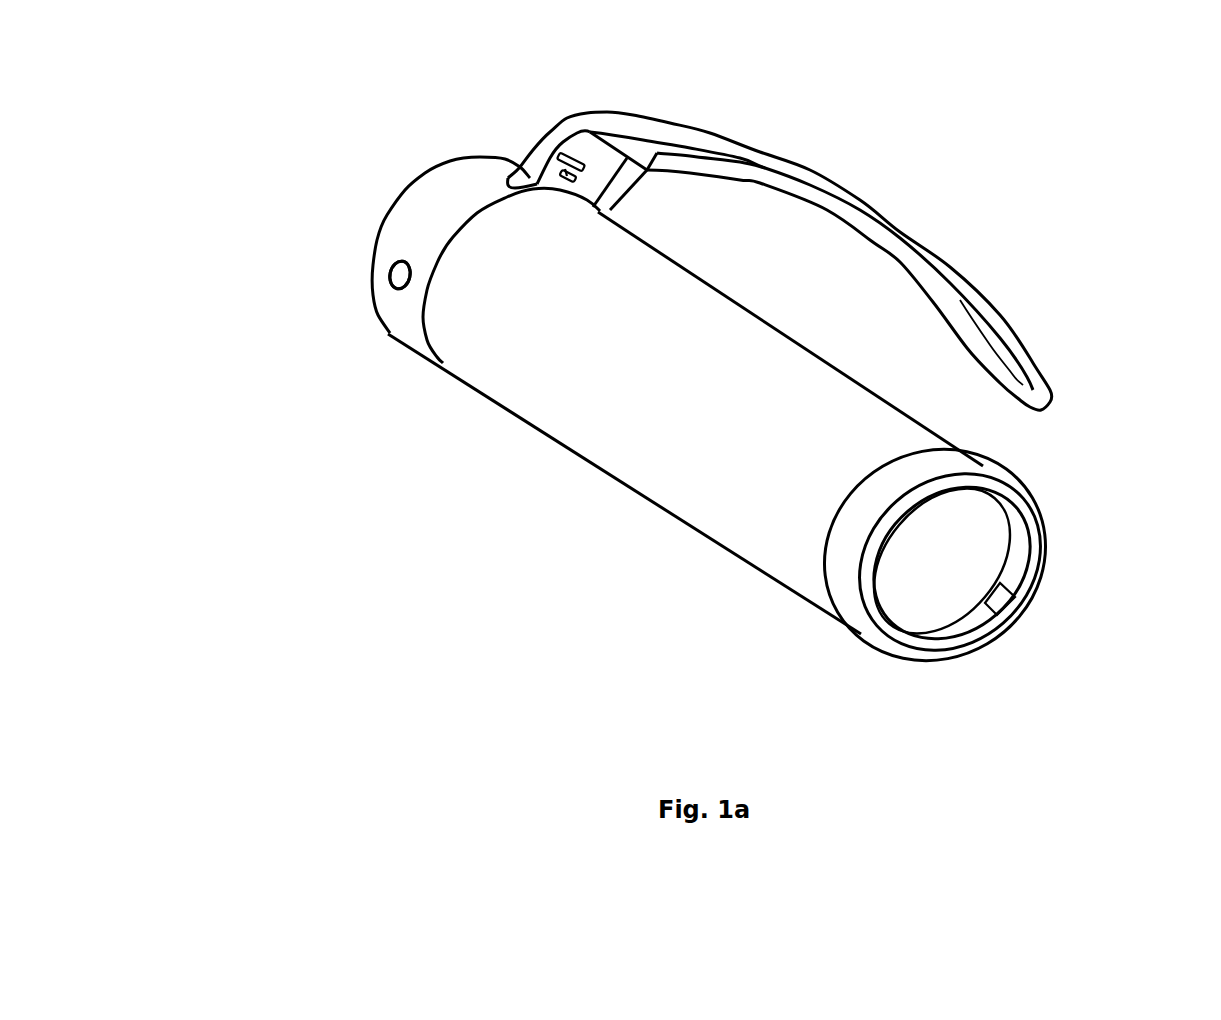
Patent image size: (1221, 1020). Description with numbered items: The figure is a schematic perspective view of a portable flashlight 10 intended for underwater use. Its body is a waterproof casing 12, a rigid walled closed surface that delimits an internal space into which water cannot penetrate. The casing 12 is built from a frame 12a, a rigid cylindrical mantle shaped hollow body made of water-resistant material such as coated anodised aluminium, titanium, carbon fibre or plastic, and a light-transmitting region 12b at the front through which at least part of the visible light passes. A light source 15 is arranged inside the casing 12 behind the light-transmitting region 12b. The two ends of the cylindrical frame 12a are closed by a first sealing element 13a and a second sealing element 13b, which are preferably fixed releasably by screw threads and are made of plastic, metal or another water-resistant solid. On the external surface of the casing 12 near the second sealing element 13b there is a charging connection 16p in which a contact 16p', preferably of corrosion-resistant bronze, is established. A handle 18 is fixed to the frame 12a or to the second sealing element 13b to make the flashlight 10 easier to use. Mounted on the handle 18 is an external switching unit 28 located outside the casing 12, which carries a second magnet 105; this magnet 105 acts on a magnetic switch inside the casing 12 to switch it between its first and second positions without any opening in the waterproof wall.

The portable flashlight 10 is at (1090, 150).
The waterproof casing 12 is at (452, 476).
The frame 12a is at (637, 435).
The light-transmitting region 12b is at (980, 562).
The first sealing element 13a is at (843, 600).
The second sealing element 13b is at (410, 320).
The light source 15 is at (908, 572).
The charging connection 16p is at (364, 201).
The contact 16p' is at (319, 255).
The handle 18 is at (780, 167).
The external switching unit 28 is at (578, 153).
The second magnet 105 is at (550, 160).